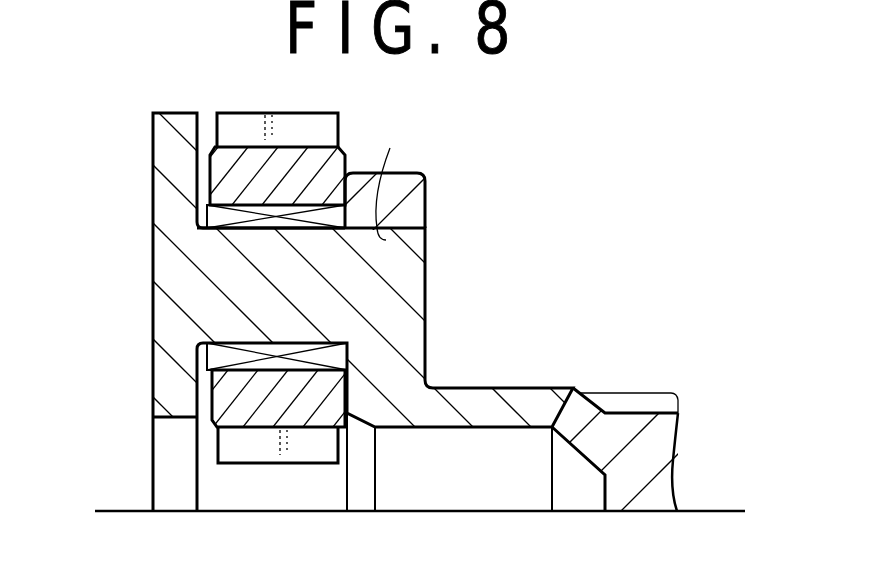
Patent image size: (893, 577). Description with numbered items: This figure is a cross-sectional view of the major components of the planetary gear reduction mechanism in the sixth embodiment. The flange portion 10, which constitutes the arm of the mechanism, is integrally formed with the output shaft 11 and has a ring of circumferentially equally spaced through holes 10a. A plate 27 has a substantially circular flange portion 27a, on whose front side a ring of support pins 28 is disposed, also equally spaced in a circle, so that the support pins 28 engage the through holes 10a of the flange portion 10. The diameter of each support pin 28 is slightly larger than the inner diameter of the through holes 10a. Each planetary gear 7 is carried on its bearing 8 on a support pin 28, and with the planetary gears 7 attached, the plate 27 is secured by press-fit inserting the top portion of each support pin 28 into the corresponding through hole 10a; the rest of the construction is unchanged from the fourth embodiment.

The planetary gear 7 is at (263, 415).
The bearing 8 is at (230, 357).
The flange portion 10 is at (420, 195).
The through hole 10a is at (412, 175).
The output shaft 11 is at (655, 445).
The plate 27 is at (148, 178).
The flange portion of plate 27a is at (168, 363).
The support pin 28 is at (410, 272).